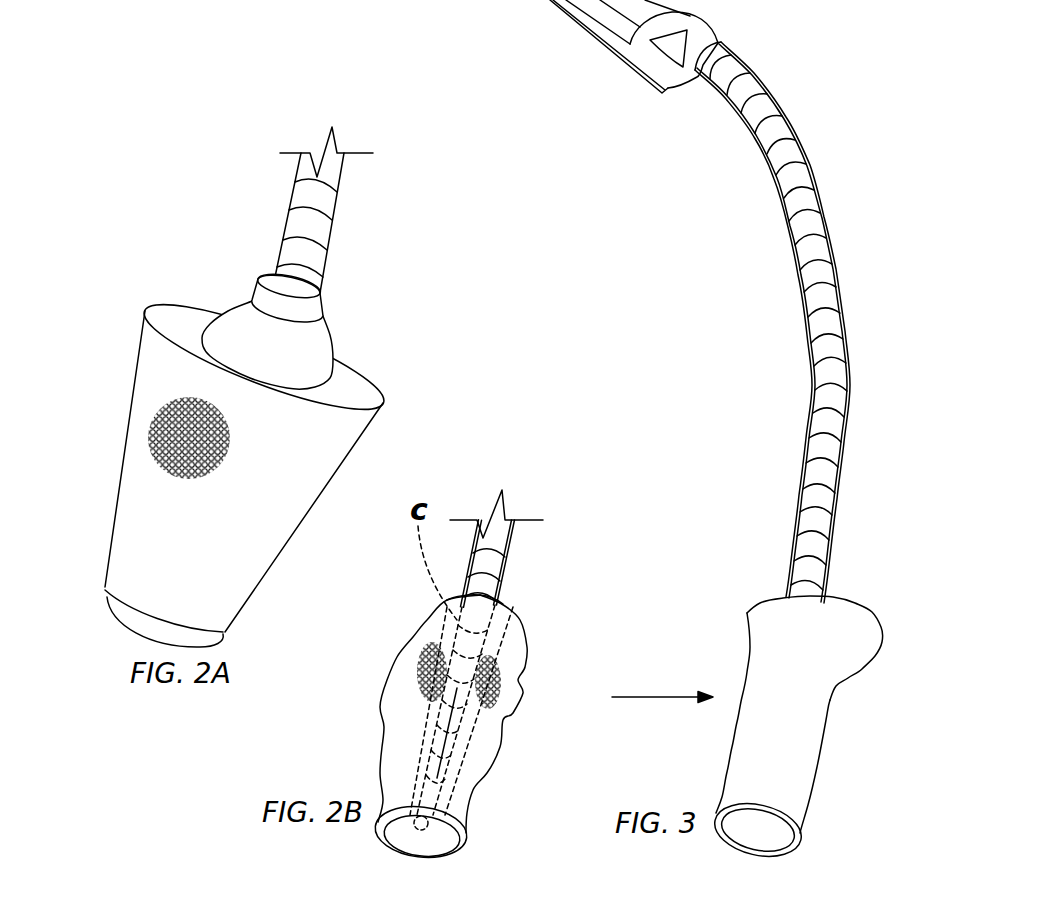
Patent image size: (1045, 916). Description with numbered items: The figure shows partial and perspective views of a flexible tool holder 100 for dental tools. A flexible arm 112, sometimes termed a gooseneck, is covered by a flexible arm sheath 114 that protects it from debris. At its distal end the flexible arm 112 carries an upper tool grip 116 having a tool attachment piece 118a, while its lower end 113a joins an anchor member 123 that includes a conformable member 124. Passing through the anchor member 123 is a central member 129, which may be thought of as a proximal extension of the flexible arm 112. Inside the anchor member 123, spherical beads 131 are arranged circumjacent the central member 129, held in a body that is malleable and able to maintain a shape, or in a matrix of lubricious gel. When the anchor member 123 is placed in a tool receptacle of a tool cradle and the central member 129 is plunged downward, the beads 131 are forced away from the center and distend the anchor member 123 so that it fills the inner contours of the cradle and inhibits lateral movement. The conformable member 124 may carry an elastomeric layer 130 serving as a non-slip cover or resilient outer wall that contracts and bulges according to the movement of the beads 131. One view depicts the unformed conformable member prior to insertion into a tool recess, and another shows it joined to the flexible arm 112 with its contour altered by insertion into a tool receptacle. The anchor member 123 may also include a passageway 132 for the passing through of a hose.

In FIG. 3, the flexible tool holder 100 is at (606, 144).
In FIG. 2A, the flexible arm 112 is at (286, 182).
In FIG. 3, the flexible arm 112 is at (786, 222).
In FIG. 2A, the lower end 113a is at (317, 258).
In FIG. 2B, the lower end 113a is at (514, 597).
In FIG. 3, the flexible arm sheath 114 is at (812, 208).
In FIG. 3, the upper tool grip 116 is at (553, 30).
In FIG. 3, the tool attachment piece 118a is at (617, 60).
In FIG. 2A, the anchor member 123 is at (400, 416).
In FIG. 2A, the conformable member 124 is at (338, 452).
In FIG. 2B, the conformable member 124 is at (437, 622).
In FIG. 3, the conformable member 124 is at (767, 630).
In FIG. 2B, the central member 129 is at (505, 708).
In FIG. 2A, the elastomeric layer 130 is at (120, 483).
In FIG. 2B, the elastomeric layer 130 is at (388, 680).
In FIG. 3, the elastomeric layer 130 is at (722, 780).
In FIG. 2A, the beads 131 is at (158, 412).
In FIG. 2B, the beads 131 is at (428, 640).
In FIG. 2B, the passageway 132 is at (470, 800).